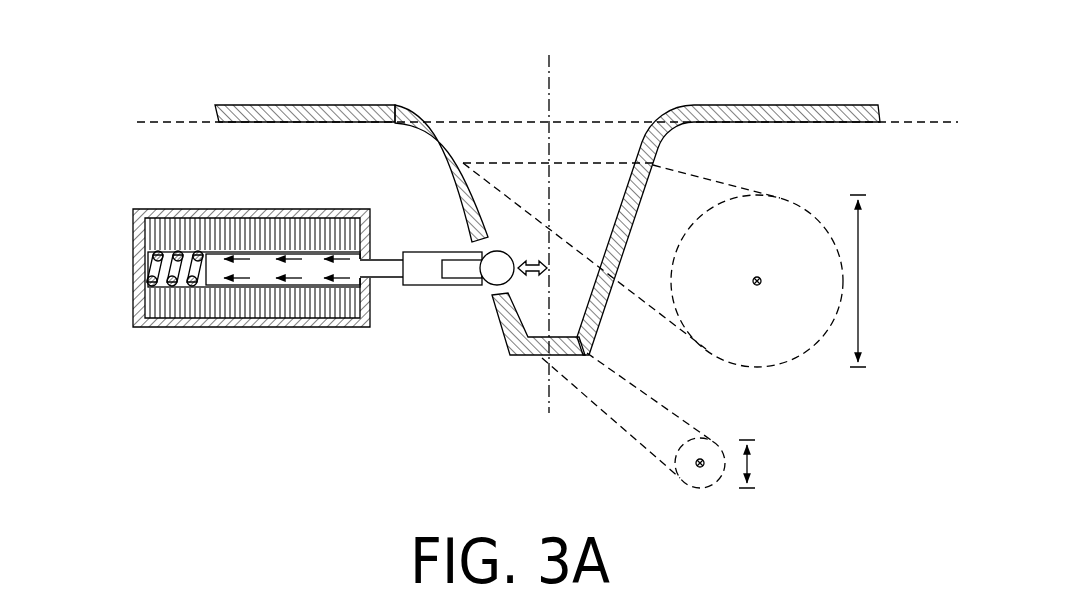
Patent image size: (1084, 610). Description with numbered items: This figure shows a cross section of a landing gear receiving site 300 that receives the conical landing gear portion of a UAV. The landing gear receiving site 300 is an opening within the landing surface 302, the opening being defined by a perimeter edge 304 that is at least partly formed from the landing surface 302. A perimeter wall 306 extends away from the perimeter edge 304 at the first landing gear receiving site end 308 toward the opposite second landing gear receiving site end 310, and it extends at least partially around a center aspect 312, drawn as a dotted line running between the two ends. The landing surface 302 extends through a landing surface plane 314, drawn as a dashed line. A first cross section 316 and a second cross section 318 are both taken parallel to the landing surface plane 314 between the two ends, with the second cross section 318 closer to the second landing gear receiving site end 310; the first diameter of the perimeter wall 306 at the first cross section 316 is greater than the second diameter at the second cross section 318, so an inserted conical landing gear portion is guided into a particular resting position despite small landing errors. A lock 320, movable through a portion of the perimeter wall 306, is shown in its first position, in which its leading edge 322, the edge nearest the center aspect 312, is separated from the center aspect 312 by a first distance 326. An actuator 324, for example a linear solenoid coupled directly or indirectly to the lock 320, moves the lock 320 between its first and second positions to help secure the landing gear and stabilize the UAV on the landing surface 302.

The landing gear receiving site 300 is at (127, 32).
The landing surface 302 is at (298, 104).
The perimeter edge 304 is at (428, 119).
The perimeter wall 306 is at (458, 184).
The first landing gear receiving site end 308 is at (604, 102).
The second landing gear receiving site end 310 is at (530, 376).
The center aspect 312 is at (548, 58).
The landing surface plane 314 is at (155, 121).
The first cross section 316 is at (809, 203).
The second cross section 318 is at (706, 496).
The lock 320 is at (476, 292).
The leading edge 322 is at (507, 250).
The actuator 324 is at (253, 328).
The first distance 326 is at (532, 277).